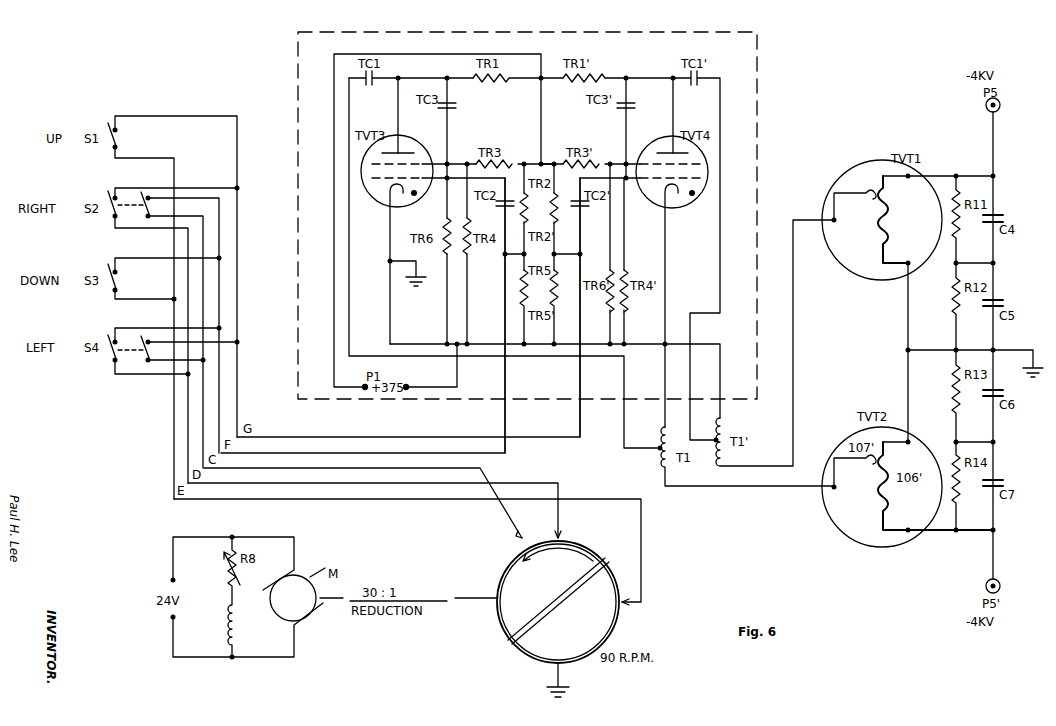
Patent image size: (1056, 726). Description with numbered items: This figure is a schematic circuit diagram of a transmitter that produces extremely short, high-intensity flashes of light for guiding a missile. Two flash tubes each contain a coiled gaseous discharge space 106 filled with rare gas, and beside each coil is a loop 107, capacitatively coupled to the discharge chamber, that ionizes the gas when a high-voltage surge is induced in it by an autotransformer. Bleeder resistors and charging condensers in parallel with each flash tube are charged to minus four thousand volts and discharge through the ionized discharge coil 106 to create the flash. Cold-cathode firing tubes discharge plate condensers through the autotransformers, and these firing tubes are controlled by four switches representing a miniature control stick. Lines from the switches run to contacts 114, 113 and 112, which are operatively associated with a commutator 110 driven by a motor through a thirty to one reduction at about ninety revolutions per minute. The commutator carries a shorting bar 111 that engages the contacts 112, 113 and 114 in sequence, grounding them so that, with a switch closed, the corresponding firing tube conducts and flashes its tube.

The gaseous discharge space 106 is at (898, 219).
The loop 107 is at (855, 198).
The commutator 110 is at (497, 623).
The shorting bar 111 is at (560, 598).
The contact 112 is at (640, 605).
The contact 113 is at (575, 529).
The contact 114 is at (534, 529).